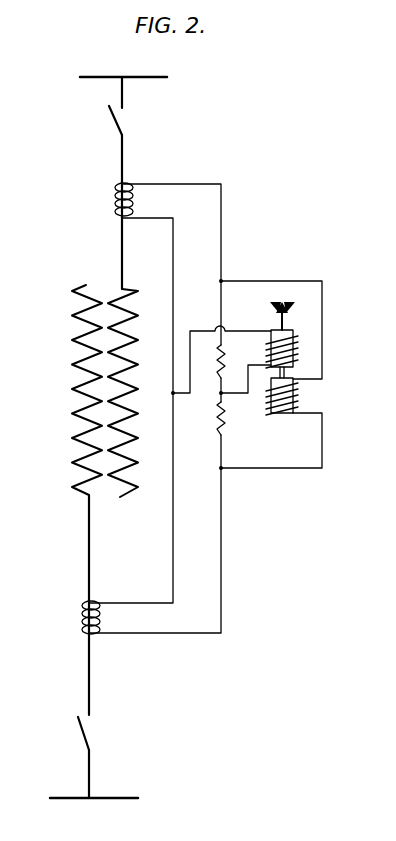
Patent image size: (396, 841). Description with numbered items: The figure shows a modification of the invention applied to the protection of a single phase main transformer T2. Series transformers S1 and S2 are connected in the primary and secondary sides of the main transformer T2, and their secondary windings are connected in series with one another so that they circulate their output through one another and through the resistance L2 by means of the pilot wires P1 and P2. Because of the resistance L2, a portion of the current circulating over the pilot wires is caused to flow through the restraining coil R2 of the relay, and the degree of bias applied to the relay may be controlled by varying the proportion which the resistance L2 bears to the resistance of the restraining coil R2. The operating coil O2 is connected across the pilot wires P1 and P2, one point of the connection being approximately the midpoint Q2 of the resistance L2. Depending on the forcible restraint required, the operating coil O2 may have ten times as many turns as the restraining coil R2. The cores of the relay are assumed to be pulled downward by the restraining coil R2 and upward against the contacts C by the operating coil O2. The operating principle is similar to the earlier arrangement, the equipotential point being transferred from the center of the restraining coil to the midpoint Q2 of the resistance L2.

The series transformer S1 is at (133, 195).
The series transformer S2 is at (100, 621).
The pilot wire P1 is at (173, 292).
The pilot wire P2 is at (221, 253).
The main transformer T2 is at (130, 390).
The resistance L2 is at (217, 375).
The midpoint of the resistance Q2 is at (225, 397).
The operating coil O2 is at (297, 354).
The restraining coil R2 is at (297, 397).
The contacts C is at (290, 300).